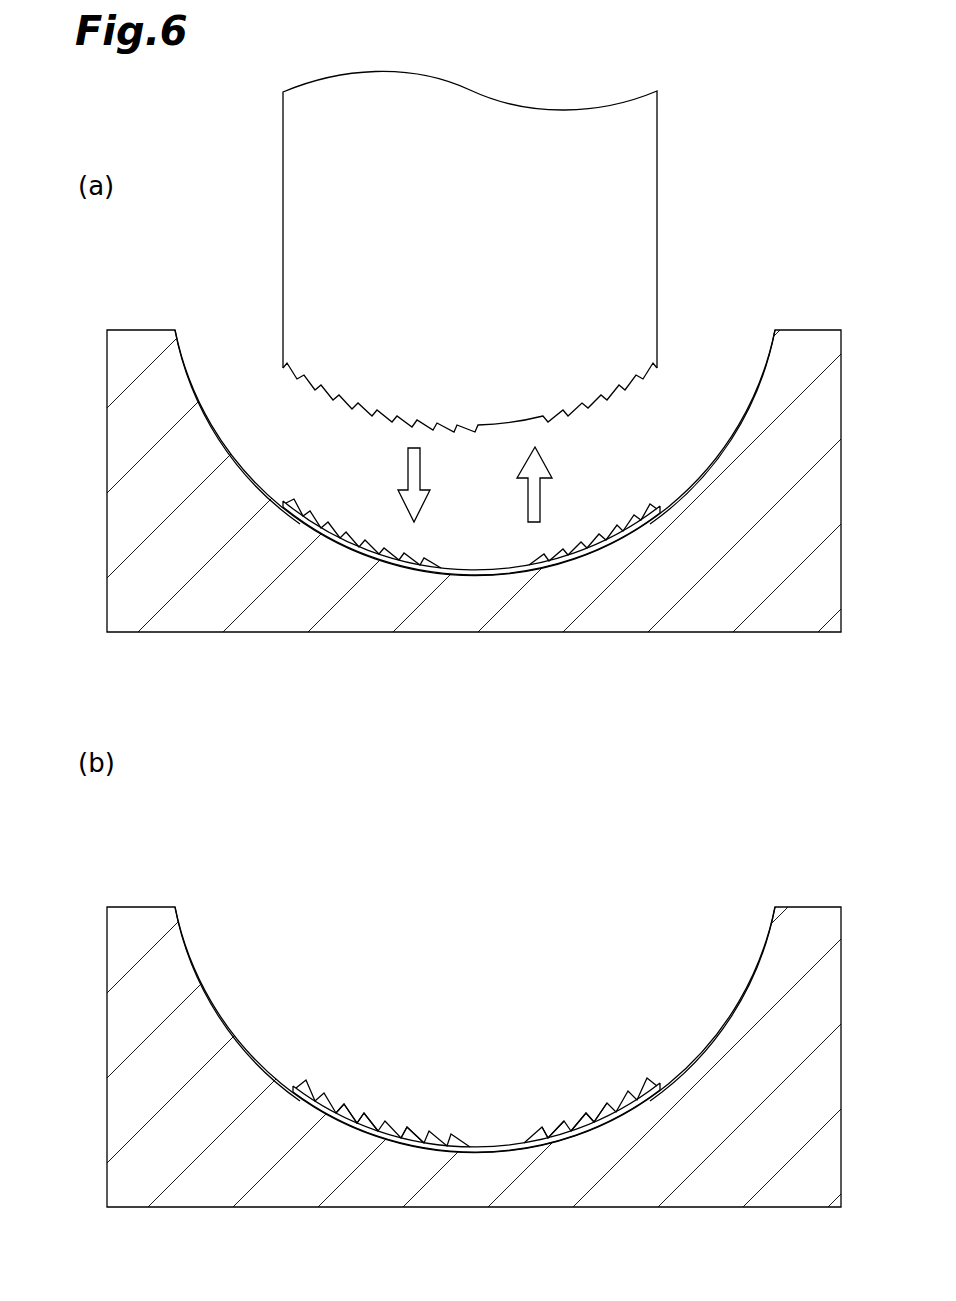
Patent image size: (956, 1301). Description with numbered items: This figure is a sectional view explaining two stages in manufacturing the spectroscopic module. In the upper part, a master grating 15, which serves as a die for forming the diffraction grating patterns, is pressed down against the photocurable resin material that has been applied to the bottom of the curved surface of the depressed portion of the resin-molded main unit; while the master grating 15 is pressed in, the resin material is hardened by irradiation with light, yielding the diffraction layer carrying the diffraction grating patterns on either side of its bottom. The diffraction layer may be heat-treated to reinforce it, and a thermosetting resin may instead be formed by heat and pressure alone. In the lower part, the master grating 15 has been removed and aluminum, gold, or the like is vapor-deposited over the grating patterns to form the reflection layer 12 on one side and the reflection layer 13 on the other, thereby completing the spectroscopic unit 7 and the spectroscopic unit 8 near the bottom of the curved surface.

The spectroscopic unit 7 is at (313, 1085).
The spectroscopic unit 8 is at (626, 1083).
The reflection layer 12 is at (411, 1120).
The reflection layer 13 is at (544, 1126).
The master grating 15 is at (648, 163).